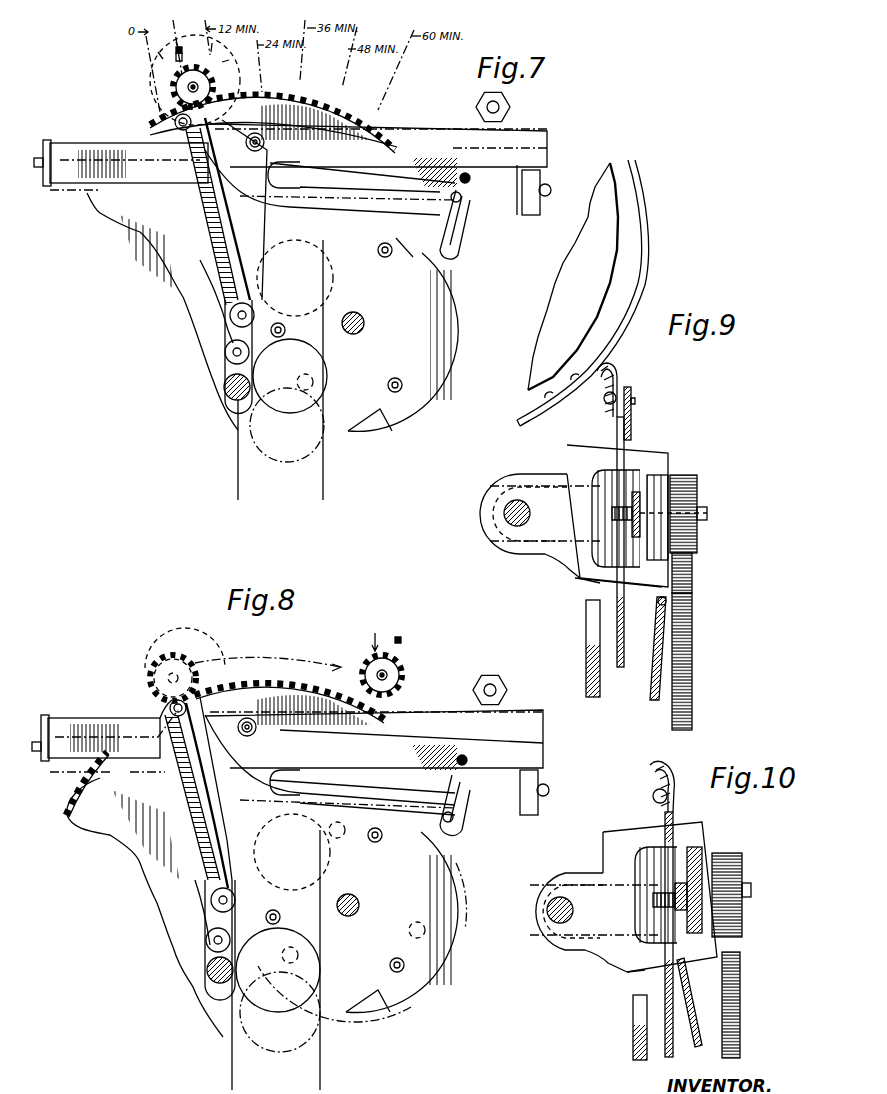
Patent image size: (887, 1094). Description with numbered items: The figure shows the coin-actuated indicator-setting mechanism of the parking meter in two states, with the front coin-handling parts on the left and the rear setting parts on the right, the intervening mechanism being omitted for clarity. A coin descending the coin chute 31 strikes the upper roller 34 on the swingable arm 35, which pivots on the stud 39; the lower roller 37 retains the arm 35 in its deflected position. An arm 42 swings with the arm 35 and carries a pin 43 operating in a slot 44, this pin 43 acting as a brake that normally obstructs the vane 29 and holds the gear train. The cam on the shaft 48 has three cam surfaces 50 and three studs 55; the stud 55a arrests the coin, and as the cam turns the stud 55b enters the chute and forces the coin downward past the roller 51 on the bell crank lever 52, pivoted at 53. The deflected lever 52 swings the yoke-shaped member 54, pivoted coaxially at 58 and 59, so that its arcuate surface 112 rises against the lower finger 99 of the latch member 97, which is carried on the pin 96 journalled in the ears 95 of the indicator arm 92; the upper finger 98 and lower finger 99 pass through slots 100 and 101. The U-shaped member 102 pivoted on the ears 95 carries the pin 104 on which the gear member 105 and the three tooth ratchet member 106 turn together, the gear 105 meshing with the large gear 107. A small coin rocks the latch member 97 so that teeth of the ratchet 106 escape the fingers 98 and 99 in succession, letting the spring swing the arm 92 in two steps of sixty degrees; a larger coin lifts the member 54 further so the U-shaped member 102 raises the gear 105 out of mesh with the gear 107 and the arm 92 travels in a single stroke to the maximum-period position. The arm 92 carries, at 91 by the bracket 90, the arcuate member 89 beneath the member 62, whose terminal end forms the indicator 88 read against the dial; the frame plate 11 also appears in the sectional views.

In FIG. 9, the frame plate 11 is at (586, 666).
In FIG. 10, the frame plate 11 is at (633, 1026).
In FIG. 7, the vane 29 is at (468, 174).
In FIG. 8, the vane 29 is at (464, 757).
In FIG. 7, the coin chute 31 is at (325, 474).
In FIG. 8, the coin chute 31 is at (322, 1054).
In FIG. 7, the upper roller 34 is at (230, 315).
In FIG. 8, the upper roller 34 is at (212, 905).
In FIG. 7, the swingable arm 35 is at (200, 262).
In FIG. 8, the swingable arm 35 is at (200, 882).
In FIG. 7, the lower roller 37 is at (225, 352).
In FIG. 8, the lower roller 37 is at (206, 942).
In FIG. 7, the stud 39 is at (175, 122).
In FIG. 8, the stud 39 is at (170, 709).
In FIG. 7, the arm 42 is at (358, 212).
In FIG. 8, the arm 42 is at (440, 855).
In FIG. 7, the pin 43 is at (462, 236).
In FIG. 8, the pin 43 is at (462, 830).
In FIG. 7, the slot 44 is at (442, 250).
In FIG. 8, the slot 44 is at (470, 808).
In FIG. 7, the shaft 48 is at (364, 322).
In FIG. 8, the shaft 48 is at (360, 905).
In FIG. 7, the cam surfaces 50 is at (450, 328).
In FIG. 8, the cam surfaces 50 is at (448, 929).
In FIG. 7, the roller 51 is at (224, 386).
In FIG. 8, the roller 51 is at (207, 971).
In FIG. 7, the bell crank lever 52 is at (420, 135).
In FIG. 8, the bell crank lever 52 is at (458, 725).
In FIG. 7, the pivot 53 is at (264, 140).
In FIG. 8, the pivot 53 is at (258, 722).
In FIG. 7, the swingable member 54 is at (83, 143).
In FIG. 9, the swingable member 54 is at (658, 603).
In FIG. 8, the swingable member 54 is at (78, 718).
In FIG. 10, the swingable member 54 is at (697, 1046).
In FIG. 7, the studs 55 is at (403, 385).
In FIG. 8, the studs 55 is at (390, 966).
In FIG. 7, the stud 55a is at (286, 328).
In FIG. 8, the stud 55a is at (282, 914).
In FIG. 7, the stud 55b is at (385, 258).
In FIG. 8, the stud 55b is at (373, 843).
In FIG. 7, the pivot 58 is at (525, 190).
In FIG. 8, the pivot 58 is at (540, 770).
In FIG. 7, the pivot 59 is at (36, 163).
In FIG. 8, the pivot 59 is at (34, 747).
In FIG. 9, the member 62 is at (613, 226).
In FIG. 9, the indicator 88 is at (639, 254).
In FIG. 9, the arcuate member 89 is at (526, 421).
In FIG. 9, the bracket 90 is at (618, 371).
In FIG. 10, the bracket 90 is at (668, 770).
In FIG. 9, the attachment point 91 is at (605, 402).
In FIG. 10, the attachment point 91 is at (653, 797).
In FIG. 9, the swingable arm 92 is at (630, 412).
In FIG. 10, the swingable arm 92 is at (675, 812).
In FIG. 9, the ears 95 is at (556, 566).
In FIG. 10, the ears 95 is at (600, 957).
In FIG. 9, the pin 96 is at (500, 530).
In FIG. 10, the pin 96 is at (565, 925).
In FIG. 9, the latch member 97 is at (576, 580).
In FIG. 10, the latch member 97 is at (632, 968).
In FIG. 7, the upper finger 98 is at (176, 52).
In FIG. 9, the upper finger 98 is at (655, 462).
In FIG. 8, the upper finger 98 is at (402, 641).
In FIG. 10, the upper finger 98 is at (704, 832).
In FIG. 7, the lower finger 99 is at (238, 90).
In FIG. 9, the lower finger 99 is at (605, 582).
In FIG. 8, the lower finger 99 is at (394, 690).
In FIG. 10, the lower finger 99 is at (700, 962).
In FIG. 9, the slot 100 is at (632, 437).
In FIG. 10, the slot 100 is at (690, 855).
In FIG. 9, the slot 101 is at (667, 599).
In FIG. 9, the U-shaped member 102 is at (490, 540).
In FIG. 10, the U-shaped member 102 is at (690, 937).
In FIG. 7, the pin 104 is at (188, 90).
In FIG. 9, the pin 104 is at (708, 513).
In FIG. 8, the pin 104 is at (392, 677).
In FIG. 10, the pin 104 is at (751, 892).
In FIG. 7, the gear member 105 is at (172, 86).
In FIG. 9, the gear member 105 is at (698, 503).
In FIG. 8, the gear member 105 is at (405, 666).
In FIG. 10, the gear member 105 is at (743, 866).
In FIG. 7, the three tooth ratchet member 106 is at (157, 70).
In FIG. 9, the three tooth ratchet member 106 is at (660, 490).
In FIG. 8, the three tooth ratchet member 106 is at (198, 668).
In FIG. 7, the large gear 107 is at (140, 235).
In FIG. 9, the large gear 107 is at (694, 665).
In FIG. 8, the large gear 107 is at (102, 838).
In FIG. 10, the large gear 107 is at (741, 1010).
In FIG. 7, the arcuate surface 112 is at (338, 110).
In FIG. 9, the arcuate surface 112 is at (690, 618).
In FIG. 8, the arcuate surface 112 is at (315, 685).
In FIG. 10, the arcuate surface 112 is at (677, 962).